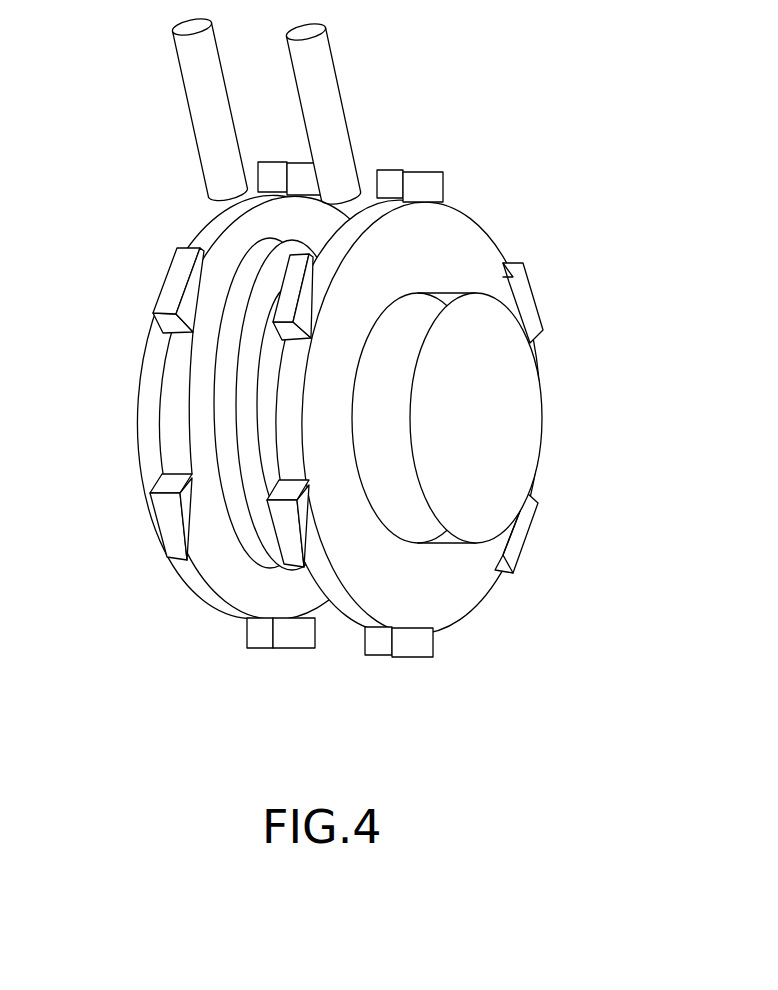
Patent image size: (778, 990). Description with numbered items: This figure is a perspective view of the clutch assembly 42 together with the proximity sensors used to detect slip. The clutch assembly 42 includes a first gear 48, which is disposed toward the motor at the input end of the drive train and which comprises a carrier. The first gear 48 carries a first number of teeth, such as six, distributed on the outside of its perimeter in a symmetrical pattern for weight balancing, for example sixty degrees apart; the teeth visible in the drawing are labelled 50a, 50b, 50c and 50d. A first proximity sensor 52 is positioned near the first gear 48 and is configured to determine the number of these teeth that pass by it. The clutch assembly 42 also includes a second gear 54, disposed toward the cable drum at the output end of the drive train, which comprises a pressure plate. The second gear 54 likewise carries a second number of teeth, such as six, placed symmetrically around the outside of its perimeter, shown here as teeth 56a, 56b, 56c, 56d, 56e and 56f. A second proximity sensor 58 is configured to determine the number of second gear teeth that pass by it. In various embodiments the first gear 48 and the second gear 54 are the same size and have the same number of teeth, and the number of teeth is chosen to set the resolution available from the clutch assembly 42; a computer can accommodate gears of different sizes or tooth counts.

The clutch assembly 42 is at (334, 374).
The first gear 48 is at (140, 391).
The tooth 50a is at (293, 163).
The tooth 50b is at (168, 275).
The tooth 50c is at (157, 522).
The tooth 50d is at (277, 648).
The first proximity sensor 52 is at (172, 53).
The second gear 54 is at (449, 425).
The tooth 56a is at (427, 170).
The tooth 56b is at (533, 290).
The tooth 56c is at (530, 535).
The tooth 56d is at (407, 658).
The tooth 56e is at (299, 567).
The tooth 56f is at (312, 284).
The second proximity sensor 58 is at (330, 50).